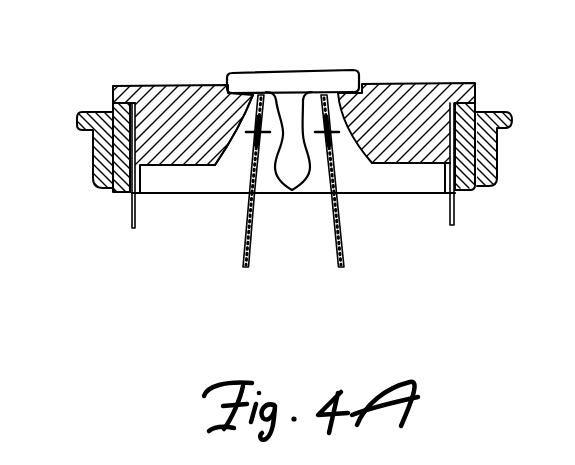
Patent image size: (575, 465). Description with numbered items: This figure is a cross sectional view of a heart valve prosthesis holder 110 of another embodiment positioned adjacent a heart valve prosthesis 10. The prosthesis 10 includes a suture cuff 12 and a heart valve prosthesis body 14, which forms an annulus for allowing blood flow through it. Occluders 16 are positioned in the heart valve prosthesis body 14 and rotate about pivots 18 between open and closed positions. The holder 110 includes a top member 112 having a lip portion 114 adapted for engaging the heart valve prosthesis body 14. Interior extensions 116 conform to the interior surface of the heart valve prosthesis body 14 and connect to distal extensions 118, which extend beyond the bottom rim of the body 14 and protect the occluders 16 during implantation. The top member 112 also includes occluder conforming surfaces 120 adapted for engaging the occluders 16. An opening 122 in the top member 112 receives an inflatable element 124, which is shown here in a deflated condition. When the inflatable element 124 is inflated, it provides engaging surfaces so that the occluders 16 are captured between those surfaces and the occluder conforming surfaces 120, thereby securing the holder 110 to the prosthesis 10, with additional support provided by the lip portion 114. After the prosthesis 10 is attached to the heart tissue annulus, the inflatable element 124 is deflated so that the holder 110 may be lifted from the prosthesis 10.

The heart valve prosthesis 10 is at (106, 106).
The suture cuff 12 is at (95, 163).
The heart valve prosthesis body 14 is at (117, 198).
The occluders 16 is at (250, 265).
The pivots 18 is at (252, 97).
The heart valve prosthesis holder 110 is at (148, 82).
The top member 112 is at (408, 95).
The lip portion 114 is at (474, 94).
The interior extensions 116 is at (150, 182).
The distal extensions 118 is at (139, 228).
The occluder conforming surfaces 120 is at (216, 150).
The opening 122 is at (277, 104).
The inflatable element 124 is at (325, 64).